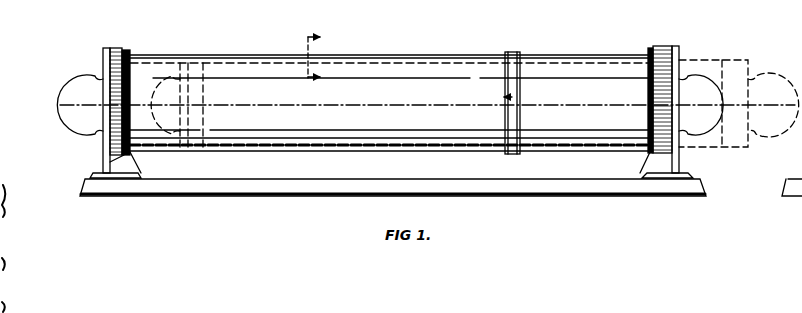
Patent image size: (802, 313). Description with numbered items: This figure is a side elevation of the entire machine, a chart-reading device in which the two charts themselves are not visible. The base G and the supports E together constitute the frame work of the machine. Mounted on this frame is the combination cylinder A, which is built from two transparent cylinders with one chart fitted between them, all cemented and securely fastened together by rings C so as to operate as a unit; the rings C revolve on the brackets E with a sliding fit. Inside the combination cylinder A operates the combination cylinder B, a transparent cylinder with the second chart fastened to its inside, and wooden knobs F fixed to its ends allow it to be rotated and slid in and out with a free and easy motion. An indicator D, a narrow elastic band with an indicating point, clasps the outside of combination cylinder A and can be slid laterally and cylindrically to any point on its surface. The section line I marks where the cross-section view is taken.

The combination cylinder A is at (152, 56).
The combination cylinder B is at (705, 60).
The rings C is at (119, 47).
The indicator D is at (513, 52).
The supports E is at (102, 157).
The wooden knobs F is at (64, 95).
The base G is at (598, 196).
The section line I is at (308, 56).